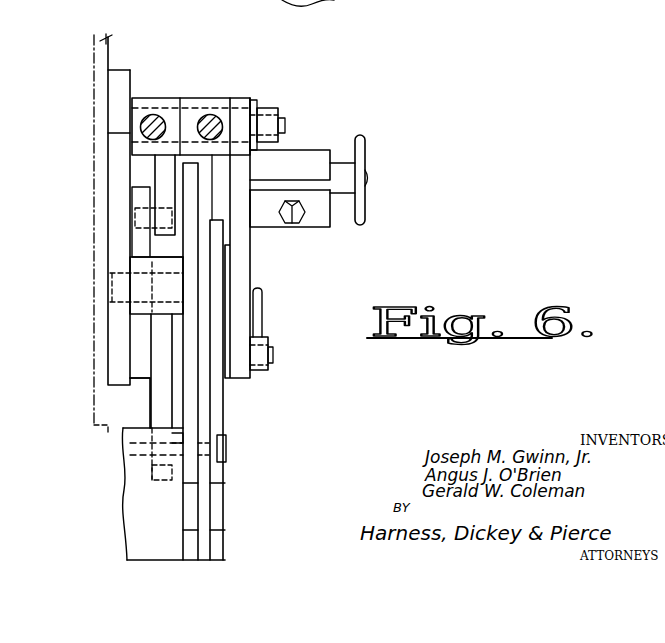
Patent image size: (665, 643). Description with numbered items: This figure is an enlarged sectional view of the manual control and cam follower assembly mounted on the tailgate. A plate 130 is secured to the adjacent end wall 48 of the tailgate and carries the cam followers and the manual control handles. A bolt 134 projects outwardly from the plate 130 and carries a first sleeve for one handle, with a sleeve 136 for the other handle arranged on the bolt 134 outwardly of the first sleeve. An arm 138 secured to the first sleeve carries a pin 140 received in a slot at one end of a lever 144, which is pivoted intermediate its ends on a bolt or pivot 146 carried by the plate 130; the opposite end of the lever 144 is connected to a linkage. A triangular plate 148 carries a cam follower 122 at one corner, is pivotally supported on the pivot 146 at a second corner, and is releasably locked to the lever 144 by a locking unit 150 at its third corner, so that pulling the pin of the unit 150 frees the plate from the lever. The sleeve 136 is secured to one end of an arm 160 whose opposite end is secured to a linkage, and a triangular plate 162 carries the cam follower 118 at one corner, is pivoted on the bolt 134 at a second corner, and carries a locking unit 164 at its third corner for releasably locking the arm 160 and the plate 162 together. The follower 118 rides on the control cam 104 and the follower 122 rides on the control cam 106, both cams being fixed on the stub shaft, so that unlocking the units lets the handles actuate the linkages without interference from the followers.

The end wall 48 is at (113, 38).
The plate 130 is at (130, 70).
The bolt 134 is at (147, 97).
The sleeve 136 is at (205, 98).
The locking unit 164 is at (337, 124).
The arm 160 is at (223, 175).
The triangular plate 162 is at (245, 249).
The locking unit 150 is at (262, 310).
The arm 138 is at (160, 162).
The pin 140 is at (132, 218).
The bolt or pivot 146 is at (135, 308).
The lever 144 is at (137, 337).
The triangular plate 148 is at (155, 388).
The cam follower 118 is at (200, 390).
The control cam 106 is at (197, 405).
The control cam 104 is at (221, 443).
The cam follower 122 is at (212, 470).